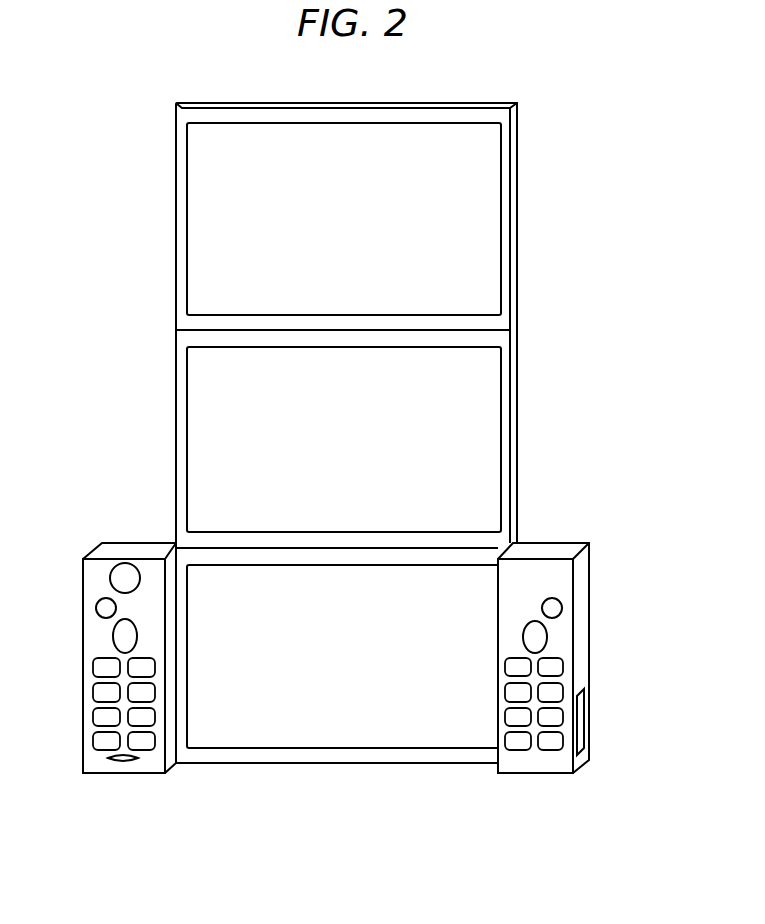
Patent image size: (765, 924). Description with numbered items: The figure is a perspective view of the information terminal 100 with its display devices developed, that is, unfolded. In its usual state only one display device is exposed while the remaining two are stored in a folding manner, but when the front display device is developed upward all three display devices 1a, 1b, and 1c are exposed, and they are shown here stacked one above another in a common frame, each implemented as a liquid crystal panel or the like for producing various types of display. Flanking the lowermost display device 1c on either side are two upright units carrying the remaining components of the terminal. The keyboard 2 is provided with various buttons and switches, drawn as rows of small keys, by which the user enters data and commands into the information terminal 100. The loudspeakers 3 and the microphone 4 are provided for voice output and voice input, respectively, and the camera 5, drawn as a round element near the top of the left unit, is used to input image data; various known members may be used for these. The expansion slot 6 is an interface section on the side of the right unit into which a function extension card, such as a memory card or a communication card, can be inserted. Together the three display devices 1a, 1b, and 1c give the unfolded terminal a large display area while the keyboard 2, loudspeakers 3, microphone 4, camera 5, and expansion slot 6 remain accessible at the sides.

The information terminal 100 is at (517, 75).
The display device 1a is at (488, 224).
The display device 1b is at (488, 398).
The display device 1c is at (408, 736).
The keyboard 2 is at (550, 666).
The loudspeakers 3 is at (552, 608).
The microphone 4 is at (123, 762).
The camera 5 is at (125, 578).
The expansion slot 6 is at (582, 712).